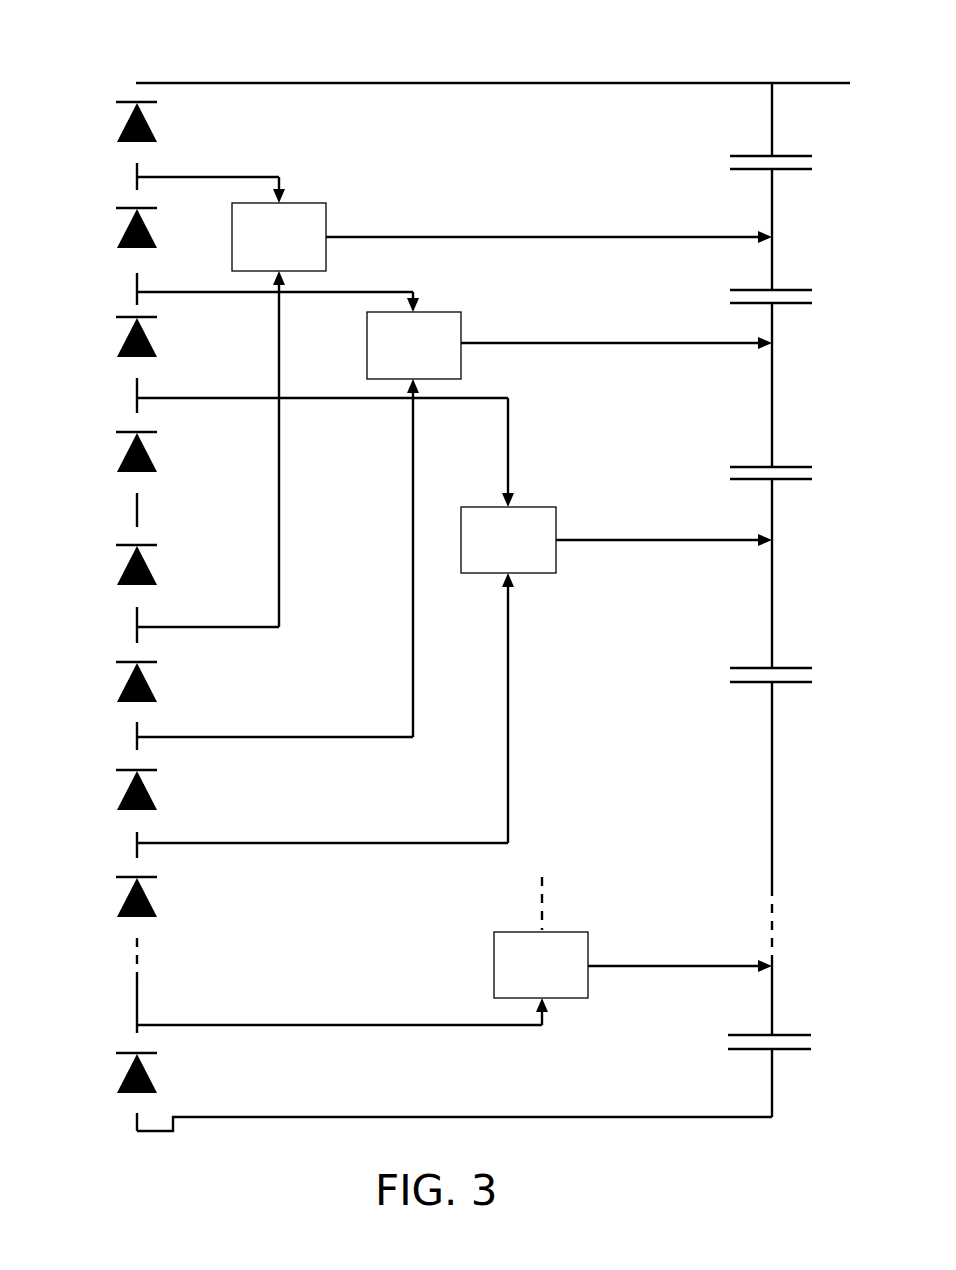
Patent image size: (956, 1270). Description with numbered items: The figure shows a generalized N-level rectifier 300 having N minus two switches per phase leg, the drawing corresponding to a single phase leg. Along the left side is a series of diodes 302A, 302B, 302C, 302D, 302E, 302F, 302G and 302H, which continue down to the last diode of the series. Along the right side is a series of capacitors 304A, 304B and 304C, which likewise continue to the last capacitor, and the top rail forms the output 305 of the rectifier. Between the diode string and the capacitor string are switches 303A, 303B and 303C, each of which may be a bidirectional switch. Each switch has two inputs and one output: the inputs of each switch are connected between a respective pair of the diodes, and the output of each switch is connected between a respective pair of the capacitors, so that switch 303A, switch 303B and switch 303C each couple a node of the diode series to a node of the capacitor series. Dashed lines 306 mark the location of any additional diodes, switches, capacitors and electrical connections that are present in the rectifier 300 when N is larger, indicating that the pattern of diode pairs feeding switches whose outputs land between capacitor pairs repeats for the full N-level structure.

The N-level rectifier 300 is at (61, 44).
The diode 302A is at (151, 113).
The diode 302B is at (150, 223).
The diode 302C is at (150, 331).
The diode 302D is at (150, 445).
The diode 302E is at (150, 567).
The diode 302F is at (150, 676).
The diode 302G is at (150, 788).
The diode 302H is at (150, 893).
The switch 303A is at (257, 260).
The switch 303B is at (392, 369).
The switch 303C is at (486, 564).
The capacitor 304A is at (738, 164).
The capacitor 304B is at (738, 474).
The capacitor 304C is at (738, 676).
The output 305 is at (883, 90).
The dashed lines 306 is at (143, 958).